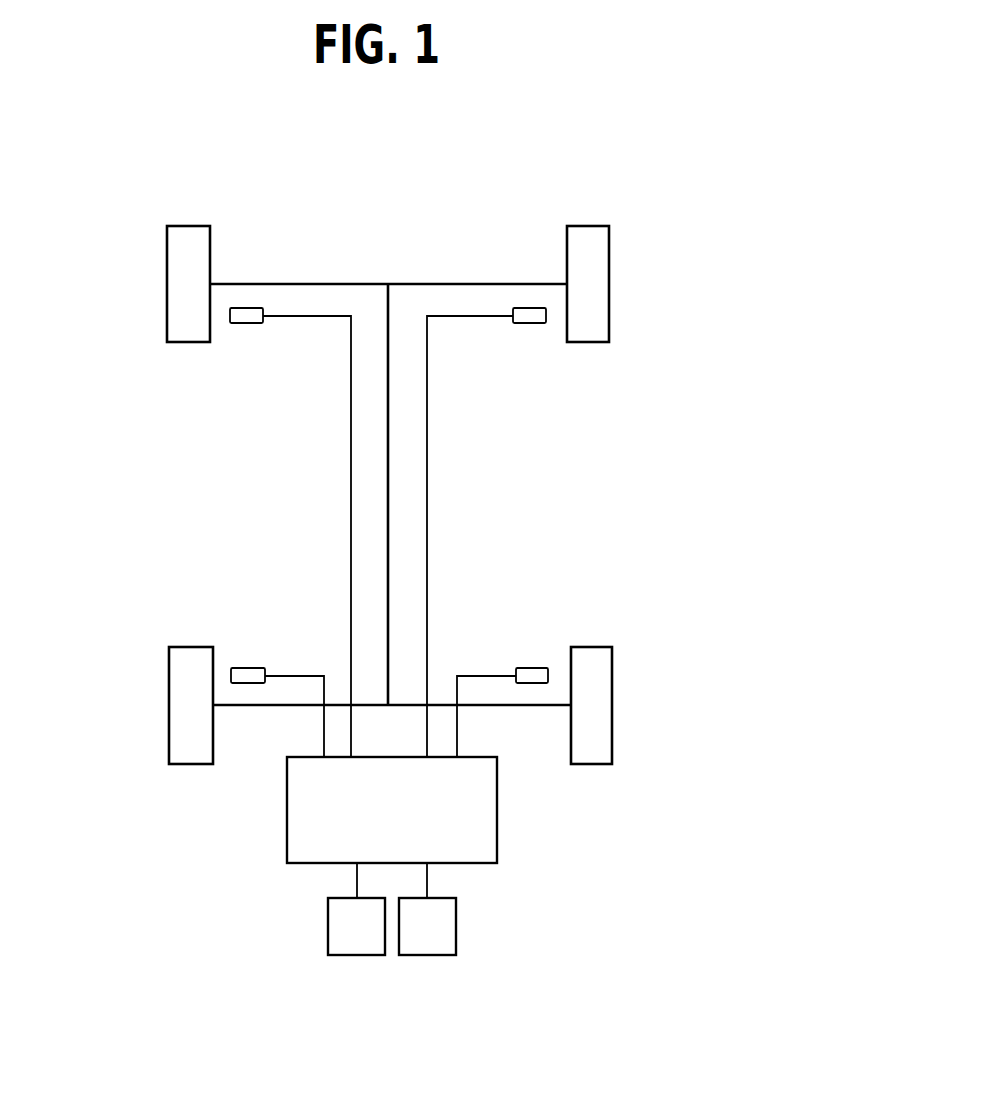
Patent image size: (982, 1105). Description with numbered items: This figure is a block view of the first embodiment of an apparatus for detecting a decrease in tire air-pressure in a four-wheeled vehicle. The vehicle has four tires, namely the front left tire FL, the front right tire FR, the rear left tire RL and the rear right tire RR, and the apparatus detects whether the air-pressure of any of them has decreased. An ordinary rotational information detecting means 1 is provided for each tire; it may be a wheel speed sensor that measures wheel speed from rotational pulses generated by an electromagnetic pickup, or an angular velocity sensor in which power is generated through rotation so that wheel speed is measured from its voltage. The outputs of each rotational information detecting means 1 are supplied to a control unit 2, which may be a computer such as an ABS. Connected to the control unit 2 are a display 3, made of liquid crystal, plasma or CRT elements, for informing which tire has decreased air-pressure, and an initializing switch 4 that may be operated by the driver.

The rotational information detecting means 1 is at (239, 317).
The control unit 2 is at (485, 845).
The display 3 is at (340, 918).
The initializing switch 4 is at (446, 921).
The front left tire FL is at (177, 260).
The front right tire FR is at (597, 262).
The rear left tire RL is at (180, 690).
The rear right tire RR is at (598, 693).